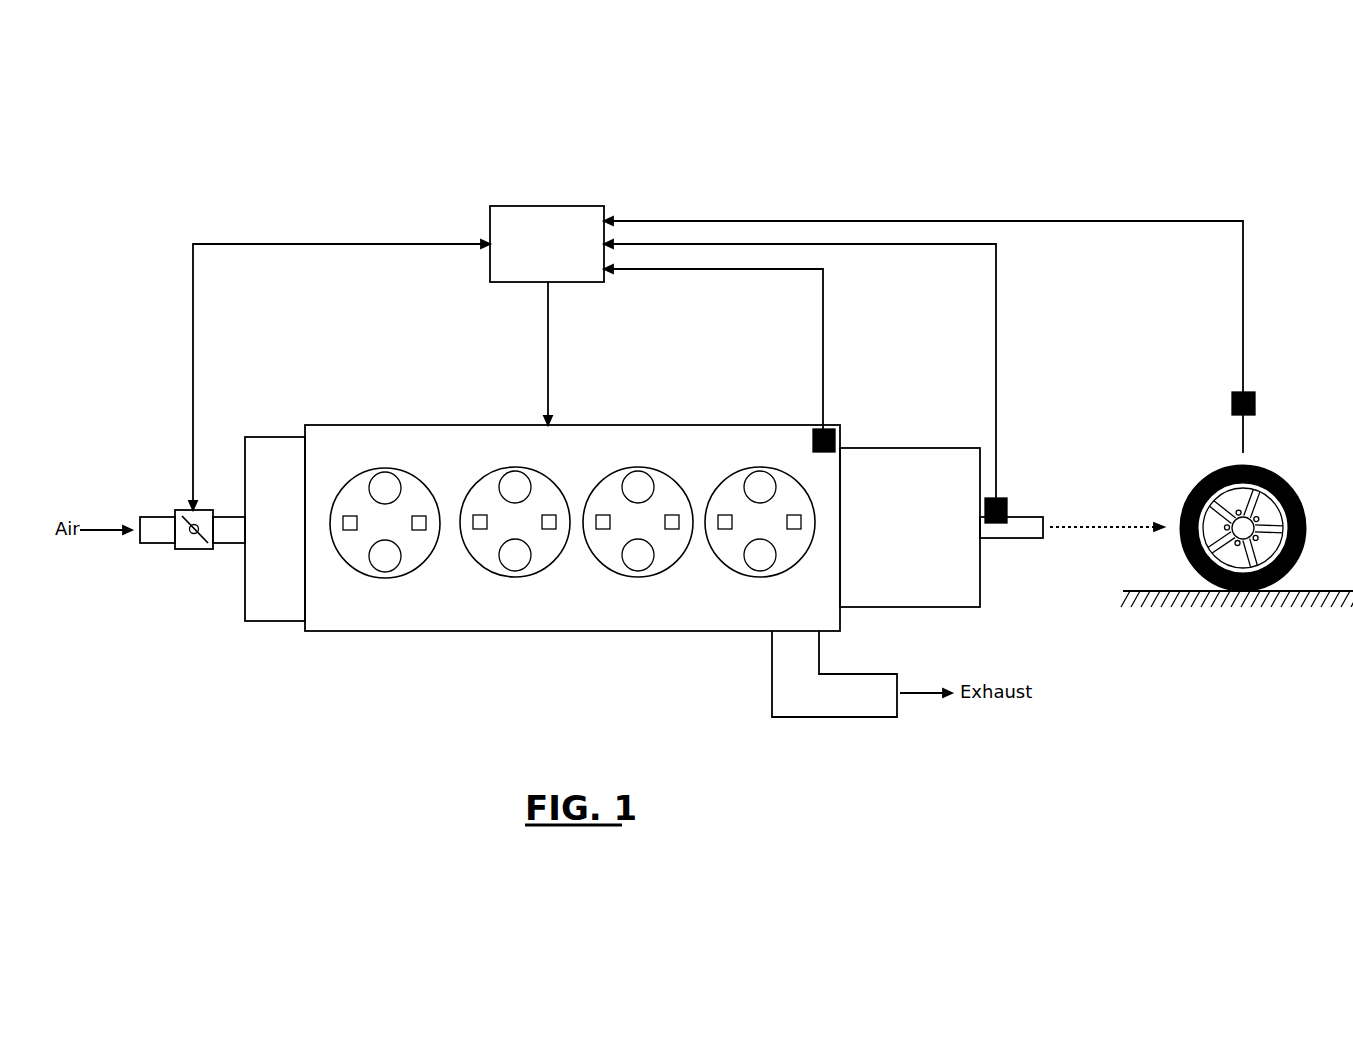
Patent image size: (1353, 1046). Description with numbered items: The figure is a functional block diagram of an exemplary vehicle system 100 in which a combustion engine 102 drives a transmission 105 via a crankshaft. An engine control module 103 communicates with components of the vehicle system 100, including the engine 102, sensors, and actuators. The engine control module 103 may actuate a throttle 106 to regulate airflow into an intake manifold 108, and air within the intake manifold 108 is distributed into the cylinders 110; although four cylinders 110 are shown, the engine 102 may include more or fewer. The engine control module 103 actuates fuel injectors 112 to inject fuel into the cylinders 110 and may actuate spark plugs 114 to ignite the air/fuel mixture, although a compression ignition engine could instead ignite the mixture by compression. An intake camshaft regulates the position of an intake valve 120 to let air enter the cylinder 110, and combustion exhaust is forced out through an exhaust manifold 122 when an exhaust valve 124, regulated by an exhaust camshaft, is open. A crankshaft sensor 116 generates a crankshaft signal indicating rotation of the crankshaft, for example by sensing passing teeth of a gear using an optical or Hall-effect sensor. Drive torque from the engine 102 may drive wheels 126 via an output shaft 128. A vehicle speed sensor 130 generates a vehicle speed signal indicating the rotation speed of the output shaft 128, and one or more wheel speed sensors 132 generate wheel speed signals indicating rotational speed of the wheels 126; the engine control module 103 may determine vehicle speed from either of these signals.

The vehicle system 100 is at (298, 152).
The combustion engine 102 is at (606, 531).
The engine control module 103 is at (541, 206).
The transmission 105 is at (900, 448).
The throttle 106 is at (192, 549).
The intake manifold 108 is at (273, 621).
The cylinders 110 is at (619, 468).
The fuel injectors 112 is at (797, 535).
The spark plugs 114 is at (724, 536).
The crankshaft sensor 116 is at (838, 437).
The intake valve 120 is at (504, 474).
The exhaust manifold 122 is at (826, 718).
The exhaust valve 124 is at (501, 558).
The wheels 126 is at (1276, 472).
The output shaft 128 is at (1012, 540).
The vehicle speed sensor 130 is at (1010, 510).
The wheel speed sensors 132 is at (1256, 404).